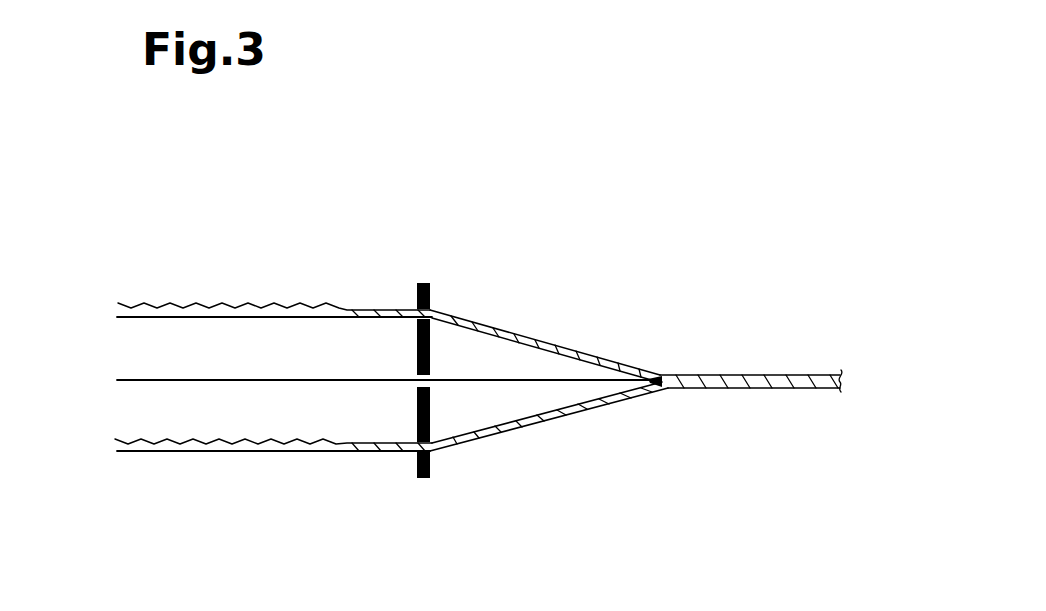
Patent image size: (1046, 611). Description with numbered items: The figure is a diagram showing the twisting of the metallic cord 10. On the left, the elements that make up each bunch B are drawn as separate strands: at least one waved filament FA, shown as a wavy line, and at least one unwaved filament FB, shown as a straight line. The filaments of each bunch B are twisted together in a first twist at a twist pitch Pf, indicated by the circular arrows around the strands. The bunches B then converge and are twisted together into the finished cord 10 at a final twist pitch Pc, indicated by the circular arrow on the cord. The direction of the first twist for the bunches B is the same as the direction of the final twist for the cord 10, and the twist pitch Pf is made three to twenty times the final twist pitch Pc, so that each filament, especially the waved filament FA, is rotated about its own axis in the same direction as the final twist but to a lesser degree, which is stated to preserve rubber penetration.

The unwaved filament FB is at (190, 317).
The waved filament FA is at (218, 305).
The twist pitch Pf is at (353, 333).
The bunch B is at (478, 307).
The final twist pitch Pc is at (776, 400).
The metallic cord 10 is at (834, 357).